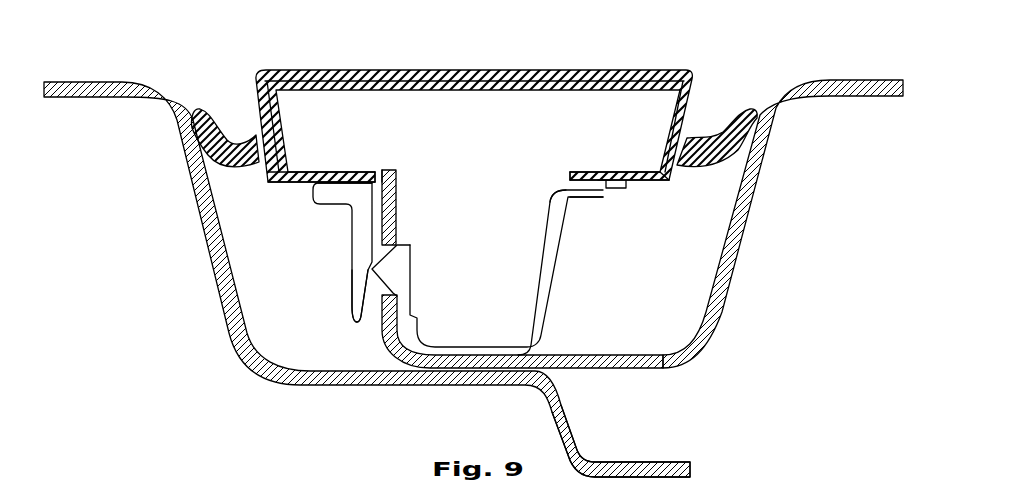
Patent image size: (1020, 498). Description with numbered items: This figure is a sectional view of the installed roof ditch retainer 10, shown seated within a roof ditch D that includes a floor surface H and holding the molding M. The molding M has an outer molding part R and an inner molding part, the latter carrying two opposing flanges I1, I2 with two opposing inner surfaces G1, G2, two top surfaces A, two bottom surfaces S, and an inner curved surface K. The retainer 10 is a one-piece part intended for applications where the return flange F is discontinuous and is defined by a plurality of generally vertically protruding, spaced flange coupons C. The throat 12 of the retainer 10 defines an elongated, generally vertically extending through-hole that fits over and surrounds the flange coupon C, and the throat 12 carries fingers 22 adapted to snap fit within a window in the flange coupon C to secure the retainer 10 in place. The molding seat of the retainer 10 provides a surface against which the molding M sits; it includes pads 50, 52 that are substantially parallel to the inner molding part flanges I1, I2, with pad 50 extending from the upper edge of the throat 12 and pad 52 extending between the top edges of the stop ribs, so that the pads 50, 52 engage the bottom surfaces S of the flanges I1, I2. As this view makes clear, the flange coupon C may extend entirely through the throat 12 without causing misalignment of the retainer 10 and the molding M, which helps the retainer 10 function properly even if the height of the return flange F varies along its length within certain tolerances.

The molding M is at (489, 123).
The outer molding part R is at (228, 148).
The top surfaces A is at (305, 173).
The flange I1 is at (351, 167).
The flange I2 is at (603, 168).
The inner surface G1 is at (383, 168).
The inner surface G2 is at (563, 168).
The roof ditch retainer 10 is at (550, 182).
The flange coupon C is at (392, 228).
The return flange F is at (383, 337).
The fingers 22 is at (405, 273).
The pad 52 is at (617, 188).
The bottom surfaces S is at (598, 193).
The inner curved surface K is at (667, 175).
The roof ditch D is at (683, 307).
The floor surface H is at (633, 356).
The pad 50 is at (322, 207).
The throat 12 is at (352, 268).